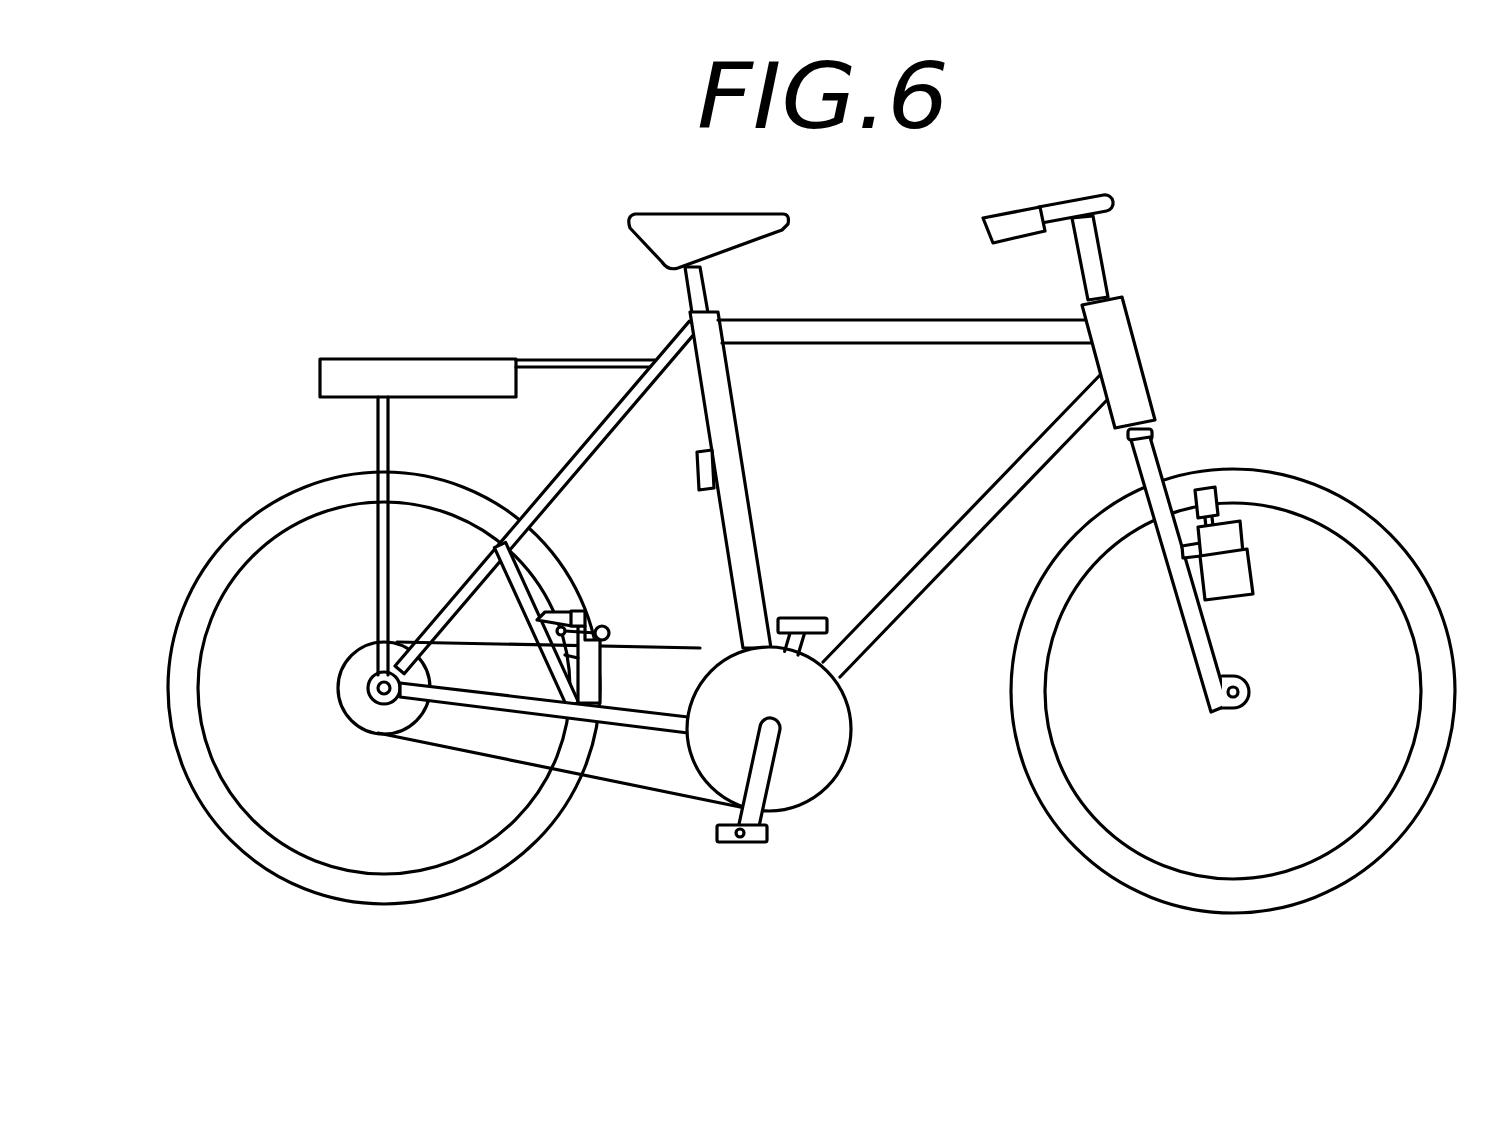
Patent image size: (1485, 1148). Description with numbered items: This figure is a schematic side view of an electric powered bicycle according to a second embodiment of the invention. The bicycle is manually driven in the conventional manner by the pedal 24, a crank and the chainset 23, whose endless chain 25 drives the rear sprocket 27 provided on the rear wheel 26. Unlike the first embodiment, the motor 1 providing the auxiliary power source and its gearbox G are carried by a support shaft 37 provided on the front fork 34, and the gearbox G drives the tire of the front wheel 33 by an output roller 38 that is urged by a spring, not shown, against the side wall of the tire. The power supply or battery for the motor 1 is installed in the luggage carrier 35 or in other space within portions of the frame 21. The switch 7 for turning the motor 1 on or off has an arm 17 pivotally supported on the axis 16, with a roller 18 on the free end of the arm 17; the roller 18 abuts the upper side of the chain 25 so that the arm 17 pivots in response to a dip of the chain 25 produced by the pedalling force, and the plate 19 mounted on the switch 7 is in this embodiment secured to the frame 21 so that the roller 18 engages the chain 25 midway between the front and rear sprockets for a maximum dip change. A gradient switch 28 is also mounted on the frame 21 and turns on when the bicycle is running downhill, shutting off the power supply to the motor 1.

The motor 1 is at (1232, 580).
The switch 7 is at (565, 628).
The axis 16 is at (548, 612).
The arm 17 is at (600, 628).
The roller 18 is at (610, 632).
The plate 19 is at (602, 658).
The frame 21 is at (622, 717).
The chainset 23 is at (832, 742).
The pedal 24 is at (753, 843).
The chain 25 is at (638, 788).
The rear wheel 26 is at (258, 530).
The rear sprocket 27 is at (340, 688).
The gradient switch 28 is at (714, 470).
The front wheel 33 is at (1395, 570).
The front fork 34 is at (1207, 665).
The luggage carrier 35 is at (428, 372).
The support shaft 37 is at (1192, 560).
The output roller 38 is at (1205, 497).
The gearbox G is at (1232, 535).